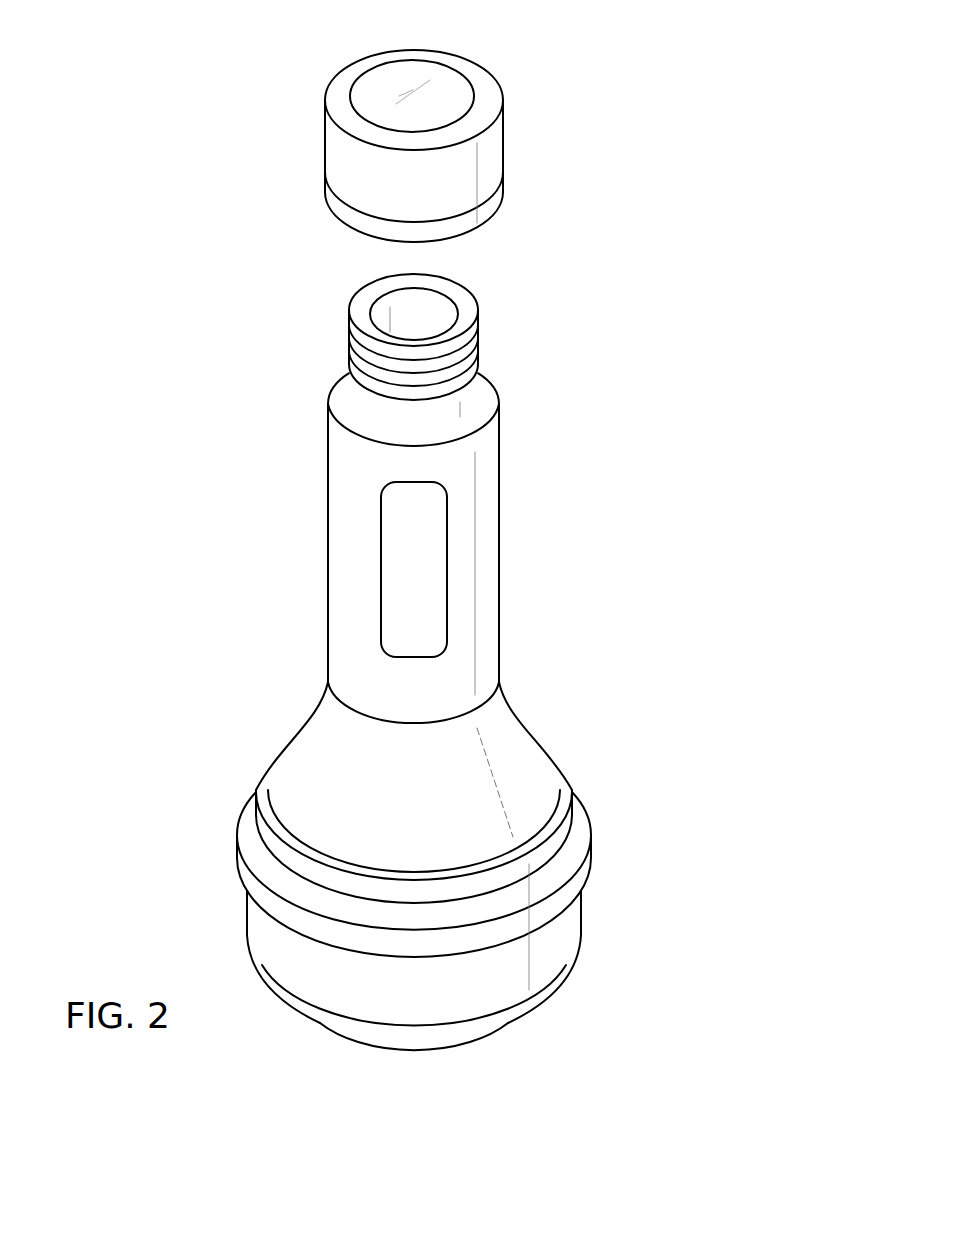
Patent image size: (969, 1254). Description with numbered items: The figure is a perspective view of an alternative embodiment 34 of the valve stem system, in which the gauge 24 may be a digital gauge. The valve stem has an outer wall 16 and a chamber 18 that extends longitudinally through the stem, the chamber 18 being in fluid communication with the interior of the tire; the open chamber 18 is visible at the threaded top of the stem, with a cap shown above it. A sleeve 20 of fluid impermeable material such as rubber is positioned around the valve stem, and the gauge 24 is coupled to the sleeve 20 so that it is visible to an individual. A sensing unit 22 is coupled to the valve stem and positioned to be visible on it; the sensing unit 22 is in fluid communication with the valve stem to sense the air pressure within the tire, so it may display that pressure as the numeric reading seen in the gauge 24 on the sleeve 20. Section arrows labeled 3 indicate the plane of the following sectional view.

The valve cap 34 is at (566, 111).
The threaded valve stem neck 16 is at (482, 338).
The valve bore 18 is at (407, 318).
The valve stem body 20 is at (488, 468).
The label panel 24 is at (381, 525).
The pressure indicia 22 is at (363, 570).
The section line 3- 3 is at (298, 368).